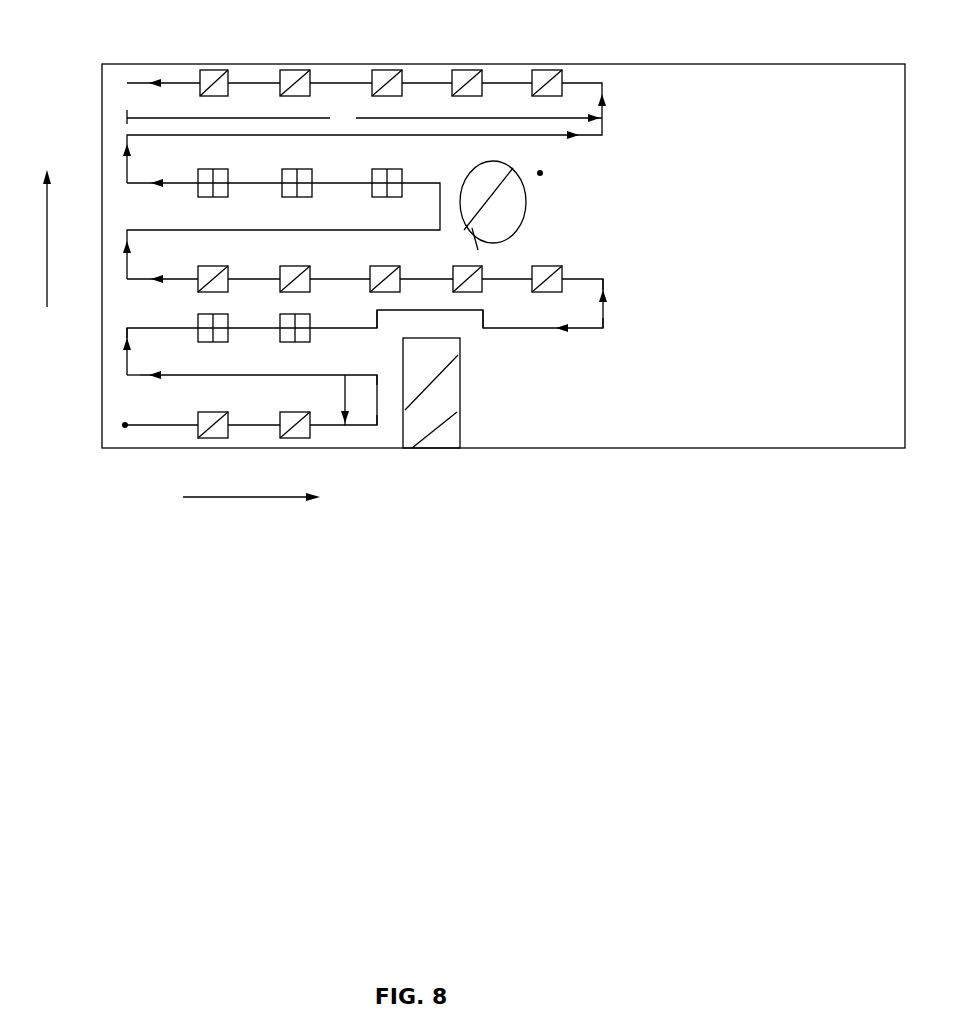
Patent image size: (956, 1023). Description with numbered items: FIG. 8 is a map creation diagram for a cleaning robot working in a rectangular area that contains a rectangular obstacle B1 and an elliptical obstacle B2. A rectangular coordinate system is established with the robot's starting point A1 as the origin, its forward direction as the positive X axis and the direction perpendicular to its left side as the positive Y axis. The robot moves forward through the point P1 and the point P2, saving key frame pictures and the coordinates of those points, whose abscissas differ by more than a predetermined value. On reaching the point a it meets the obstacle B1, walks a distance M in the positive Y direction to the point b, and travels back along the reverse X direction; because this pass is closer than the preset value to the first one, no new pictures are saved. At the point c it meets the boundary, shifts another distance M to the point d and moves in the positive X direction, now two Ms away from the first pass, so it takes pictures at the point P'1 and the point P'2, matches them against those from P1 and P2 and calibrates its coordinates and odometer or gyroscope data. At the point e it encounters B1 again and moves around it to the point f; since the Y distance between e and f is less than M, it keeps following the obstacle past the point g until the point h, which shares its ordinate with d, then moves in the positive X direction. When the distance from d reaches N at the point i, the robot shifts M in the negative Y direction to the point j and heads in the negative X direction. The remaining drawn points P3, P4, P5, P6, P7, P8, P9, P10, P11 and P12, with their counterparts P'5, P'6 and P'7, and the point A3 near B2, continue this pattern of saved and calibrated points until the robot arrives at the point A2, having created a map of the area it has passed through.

The starting point A1 is at (233, 409).
The point A2 is at (359, 118).
The point A3 is at (560, 174).
The rectangular obstacle B1 is at (431, 393).
The elliptical obstacle B2 is at (493, 205).
The predetermined distance M is at (258, 398).
The distance N is at (364, 118).
The point P1 is at (214, 412).
The point P2 is at (296, 412).
The position P3 is at (548, 264).
The position P4 is at (468, 264).
The position P5 is at (386, 264).
The position P6 is at (296, 264).
The position P7 is at (214, 264).
The position P8 is at (547, 67).
The position P9 is at (467, 67).
The position P10 is at (388, 67).
The position P11 is at (295, 67).
The position P12 is at (216, 67).
The point P'1 is at (215, 340).
The point P'2 is at (297, 340).
The position P'5 is at (388, 195).
The position P'6 is at (298, 195).
The position P'7 is at (214, 195).
The point a is at (385, 428).
The point b is at (385, 368).
The point c is at (125, 376).
The point d is at (119, 320).
The point e is at (367, 334).
The point f is at (367, 305).
The point g is at (490, 306).
The point h is at (490, 337).
The point i is at (609, 326).
The point j is at (611, 282).